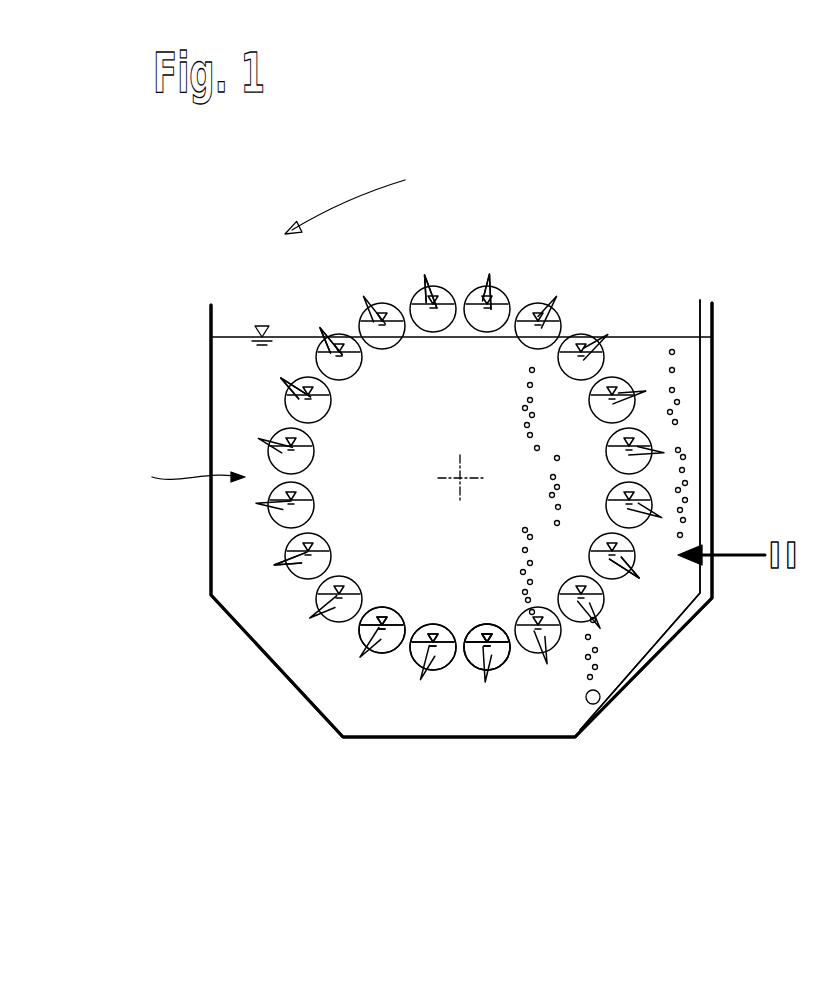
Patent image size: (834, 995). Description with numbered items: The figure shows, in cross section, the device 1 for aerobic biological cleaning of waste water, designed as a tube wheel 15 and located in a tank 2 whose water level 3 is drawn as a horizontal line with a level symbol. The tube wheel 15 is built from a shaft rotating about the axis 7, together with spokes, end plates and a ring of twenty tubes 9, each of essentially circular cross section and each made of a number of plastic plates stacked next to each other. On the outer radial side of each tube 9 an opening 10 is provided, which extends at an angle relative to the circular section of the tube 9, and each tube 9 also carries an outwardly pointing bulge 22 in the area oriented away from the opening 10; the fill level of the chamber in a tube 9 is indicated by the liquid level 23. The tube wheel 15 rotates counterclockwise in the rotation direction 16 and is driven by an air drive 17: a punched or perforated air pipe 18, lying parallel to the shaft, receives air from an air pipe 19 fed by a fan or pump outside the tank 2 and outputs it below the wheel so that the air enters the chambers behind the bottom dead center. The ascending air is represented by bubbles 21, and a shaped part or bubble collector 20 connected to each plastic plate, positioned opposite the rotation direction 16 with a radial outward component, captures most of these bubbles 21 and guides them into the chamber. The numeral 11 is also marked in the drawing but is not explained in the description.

The device 1 is at (643, 248).
The tank 2 is at (713, 463).
The water level 3 is at (233, 333).
The axis 7 is at (458, 478).
The tube 9 is at (522, 272).
The opening 10 is at (323, 338).
The lower nozzle 11 is at (384, 598).
The tube wheel 15 is at (182, 477).
The rotation direction 16 is at (345, 193).
The air drive 17 is at (712, 508).
The air pipe 18 is at (598, 706).
The air pipe 19 is at (700, 410).
The shaped part 20 is at (433, 295).
The bubbles 21 is at (674, 352).
The bulge 22 is at (487, 672).
The liquid level 23 is at (472, 612).